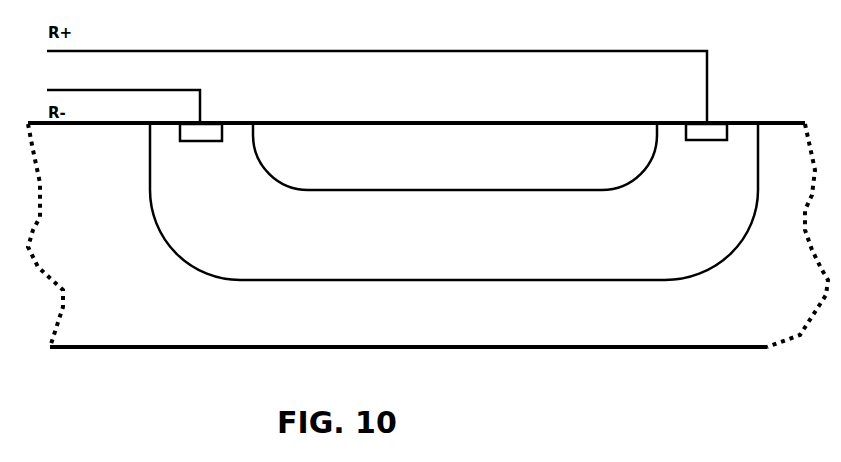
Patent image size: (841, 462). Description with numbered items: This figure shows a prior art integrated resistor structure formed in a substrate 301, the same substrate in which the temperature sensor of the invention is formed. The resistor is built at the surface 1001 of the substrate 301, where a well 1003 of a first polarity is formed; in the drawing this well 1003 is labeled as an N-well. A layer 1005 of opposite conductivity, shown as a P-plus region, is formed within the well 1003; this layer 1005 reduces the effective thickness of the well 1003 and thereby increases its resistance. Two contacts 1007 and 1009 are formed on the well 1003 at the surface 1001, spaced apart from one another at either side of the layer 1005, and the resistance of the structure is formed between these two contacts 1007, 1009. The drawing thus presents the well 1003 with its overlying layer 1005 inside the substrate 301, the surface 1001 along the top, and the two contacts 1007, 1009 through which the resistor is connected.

The substrate 301 is at (207, 334).
The surface 1001 is at (452, 120).
The N-well 1003 is at (550, 258).
The P+ region 1005 is at (372, 160).
The contact 1007 is at (715, 137).
The contact 1009 is at (207, 137).